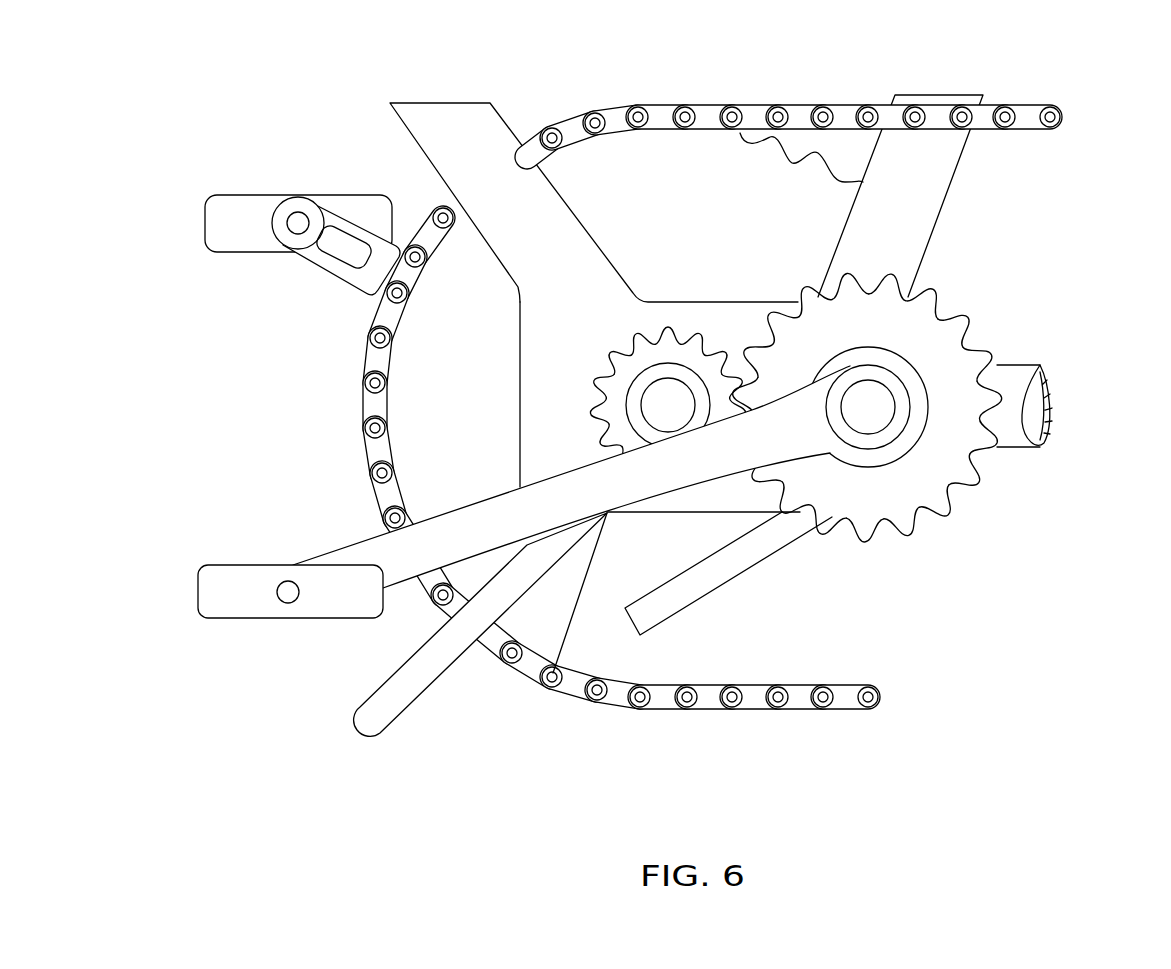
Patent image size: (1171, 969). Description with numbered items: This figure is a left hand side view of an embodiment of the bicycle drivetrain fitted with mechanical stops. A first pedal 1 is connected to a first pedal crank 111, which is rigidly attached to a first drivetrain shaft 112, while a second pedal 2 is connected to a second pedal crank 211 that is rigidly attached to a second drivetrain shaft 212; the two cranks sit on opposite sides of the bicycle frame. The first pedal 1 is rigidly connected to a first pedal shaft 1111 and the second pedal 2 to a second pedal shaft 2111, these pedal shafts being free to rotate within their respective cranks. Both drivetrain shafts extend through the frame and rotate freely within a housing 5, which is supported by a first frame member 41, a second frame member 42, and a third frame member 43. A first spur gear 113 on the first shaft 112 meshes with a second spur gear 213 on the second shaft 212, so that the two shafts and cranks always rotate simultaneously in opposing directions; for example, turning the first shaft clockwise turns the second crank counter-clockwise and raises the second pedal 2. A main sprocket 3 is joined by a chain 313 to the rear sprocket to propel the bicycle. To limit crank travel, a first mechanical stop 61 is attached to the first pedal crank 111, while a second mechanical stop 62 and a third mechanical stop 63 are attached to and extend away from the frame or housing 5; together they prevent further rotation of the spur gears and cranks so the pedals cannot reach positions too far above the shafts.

The first pedal 1 is at (240, 215).
The first pedal shaft 1111 is at (302, 222).
The first pedal crank 111 is at (316, 234).
The first mechanical stop 61 is at (338, 250).
The second frame member 42 is at (490, 142).
The housing 5 is at (733, 322).
The first frame member 41 is at (913, 197).
The chain 313 is at (847, 117).
The main sprocket 3 is at (423, 400).
The third mechanical stop 63 is at (723, 570).
The first spur gear 113 is at (524, 550).
The first drivetrain shaft 112 is at (668, 413).
The second spur gear 213 is at (935, 510).
The second mechanical stop 62 is at (410, 687).
The second pedal crank 211 is at (603, 495).
The second drivetrain shaft 212 is at (871, 407).
The second pedal 2 is at (290, 650).
The second pedal shaft 2111 is at (296, 598).
The third frame member 43 is at (1026, 378).